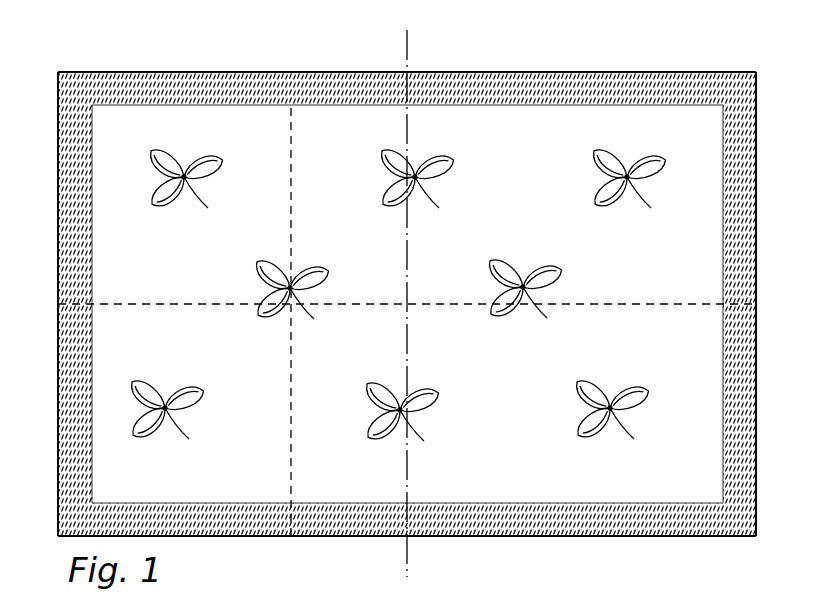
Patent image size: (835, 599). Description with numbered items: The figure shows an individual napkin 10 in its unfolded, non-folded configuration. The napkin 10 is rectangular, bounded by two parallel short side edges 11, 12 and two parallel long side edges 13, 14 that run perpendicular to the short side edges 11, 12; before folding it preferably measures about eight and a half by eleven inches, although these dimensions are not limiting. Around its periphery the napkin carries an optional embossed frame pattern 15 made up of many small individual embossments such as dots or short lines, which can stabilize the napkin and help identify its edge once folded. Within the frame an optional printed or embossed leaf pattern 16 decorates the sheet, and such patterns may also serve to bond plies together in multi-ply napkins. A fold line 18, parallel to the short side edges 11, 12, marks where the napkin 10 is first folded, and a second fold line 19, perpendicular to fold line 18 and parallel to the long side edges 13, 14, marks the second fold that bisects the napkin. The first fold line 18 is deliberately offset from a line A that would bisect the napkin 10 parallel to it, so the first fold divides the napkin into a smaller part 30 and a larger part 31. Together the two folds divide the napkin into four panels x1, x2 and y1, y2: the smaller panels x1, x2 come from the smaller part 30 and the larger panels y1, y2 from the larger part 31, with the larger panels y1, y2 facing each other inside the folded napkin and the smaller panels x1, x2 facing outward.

The napkin 10 is at (413, 296).
The short side edge 11 is at (57, 242).
The short side edge 12 is at (759, 197).
The long side edge 13 is at (522, 69).
The long side edge 14 is at (514, 539).
The embossed frame pattern 15 is at (740, 439).
The leaf pattern 16 is at (614, 199).
The fold line 18 is at (292, 118).
The fold line 19 is at (695, 304).
The smaller part 30 is at (171, 284).
The larger part 31 is at (652, 284).
The panel x1 is at (250, 184).
The panel x2 is at (249, 364).
The panel y1 is at (479, 185).
The panel y2 is at (479, 364).
The line A is at (407, 557).